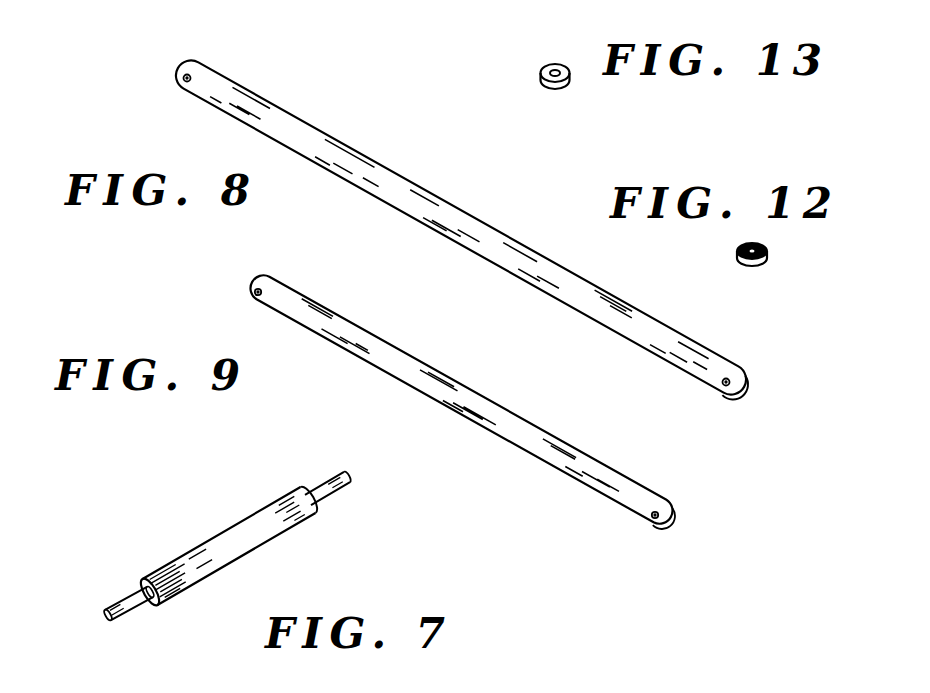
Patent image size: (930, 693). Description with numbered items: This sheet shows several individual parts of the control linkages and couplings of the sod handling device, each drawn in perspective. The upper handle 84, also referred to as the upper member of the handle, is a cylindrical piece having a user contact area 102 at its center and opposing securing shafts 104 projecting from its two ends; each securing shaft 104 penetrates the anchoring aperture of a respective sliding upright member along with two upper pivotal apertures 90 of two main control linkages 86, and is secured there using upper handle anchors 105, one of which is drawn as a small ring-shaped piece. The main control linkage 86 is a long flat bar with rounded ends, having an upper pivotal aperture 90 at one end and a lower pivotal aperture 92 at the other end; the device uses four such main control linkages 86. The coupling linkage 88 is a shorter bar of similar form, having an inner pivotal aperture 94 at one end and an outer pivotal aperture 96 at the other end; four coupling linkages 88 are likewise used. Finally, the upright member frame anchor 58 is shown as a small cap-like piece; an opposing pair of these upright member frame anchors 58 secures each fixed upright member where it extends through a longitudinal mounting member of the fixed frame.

In FIG. 7, the upper handle 84 is at (218, 532).
In FIG. 7, the user contact area 102 is at (233, 557).
In FIG. 7, the securing shaft 104 is at (337, 493).
In FIG. 8, the main control linkage 86 is at (488, 258).
In FIG. 8, the upper pivotal aperture 90 is at (181, 84).
In FIG. 8, the lower pivotal aperture 92 is at (722, 388).
In FIG. 9, the coupling linkage 88 is at (417, 390).
In FIG. 9, the inner pivotal aperture 94 is at (252, 295).
In FIG. 9, the outer pivotal aperture 96 is at (652, 518).
In FIG. 13, the upper handle anchor 105 is at (543, 86).
In FIG. 12, the upright member frame anchor 58 is at (765, 262).